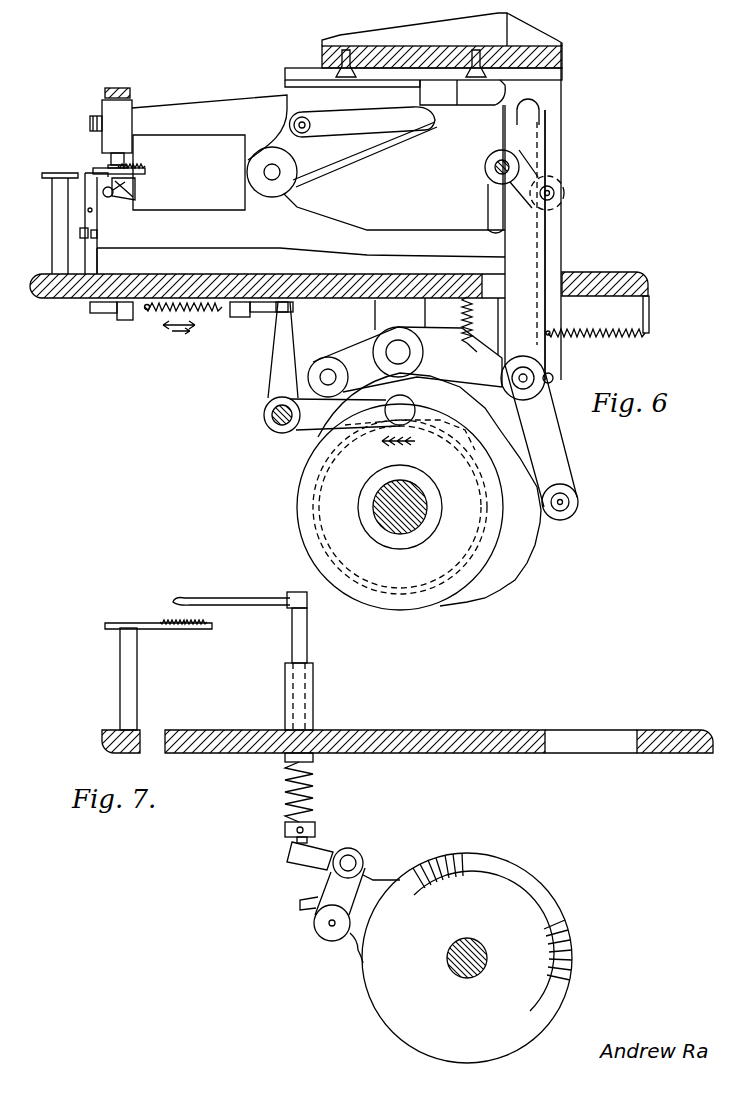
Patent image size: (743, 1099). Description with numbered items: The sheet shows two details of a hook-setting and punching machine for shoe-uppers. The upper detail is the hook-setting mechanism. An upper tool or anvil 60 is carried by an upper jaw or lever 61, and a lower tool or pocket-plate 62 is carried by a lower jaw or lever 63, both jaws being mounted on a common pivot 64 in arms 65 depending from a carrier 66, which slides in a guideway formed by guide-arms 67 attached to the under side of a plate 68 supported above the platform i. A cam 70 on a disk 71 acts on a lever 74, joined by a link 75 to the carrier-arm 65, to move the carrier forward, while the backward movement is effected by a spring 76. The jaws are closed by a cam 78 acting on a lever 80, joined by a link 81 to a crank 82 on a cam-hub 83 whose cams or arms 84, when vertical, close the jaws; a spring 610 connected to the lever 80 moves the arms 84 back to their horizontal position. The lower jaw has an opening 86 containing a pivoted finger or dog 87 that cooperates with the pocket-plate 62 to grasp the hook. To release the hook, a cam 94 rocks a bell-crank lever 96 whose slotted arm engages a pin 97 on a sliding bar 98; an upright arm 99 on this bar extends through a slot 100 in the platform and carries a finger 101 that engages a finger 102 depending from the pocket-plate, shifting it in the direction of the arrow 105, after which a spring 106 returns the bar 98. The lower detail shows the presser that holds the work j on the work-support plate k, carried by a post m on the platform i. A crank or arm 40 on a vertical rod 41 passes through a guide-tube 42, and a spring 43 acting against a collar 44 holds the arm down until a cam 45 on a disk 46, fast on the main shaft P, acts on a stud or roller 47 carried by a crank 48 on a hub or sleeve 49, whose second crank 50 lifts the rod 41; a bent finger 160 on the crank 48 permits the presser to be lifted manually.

In FIG. 6, the upper jaw or lever 61 is at (183, 108).
In FIG. 6, the lower jaw or lever 63 is at (301, 301).
In FIG. 6, the common pivot 64 is at (272, 184).
In FIG. 6, the arms 65 is at (365, 155).
In FIG. 6, the link 75 is at (401, 131).
In FIG. 6, the plate 68 is at (322, 46).
In FIG. 6, the carrier 66 is at (287, 70).
In FIG. 6, the guide-arms 67 is at (462, 103).
In FIG. 6, the cams, cranks, or arms 84 is at (503, 125).
In FIG. 6, the cam-hub 83 is at (485, 167).
In FIG. 6, the crank 82 is at (551, 178).
In FIG. 6, the lever 74 is at (568, 455).
In FIG. 6, the link 81 is at (546, 352).
In FIG. 6, the spring 76 is at (597, 327).
In FIG. 6, the spring 610 is at (462, 318).
In FIG. 6, the lever 80 is at (362, 351).
In FIG. 6, the pin 97 is at (278, 316).
In FIG. 6, the bell-crank lever 96 is at (288, 431).
In FIG. 6, the cam 78 is at (422, 404).
In FIG. 6, the disk 71 is at (428, 610).
In FIG. 6, the cam 70 is at (522, 578).
In FIG. 6, the cam 94 is at (463, 433).
In FIG. 6, the upper tool or anvil 60 is at (110, 160).
In FIG. 6, the pocket-plate 62 is at (93, 171).
In FIG. 6, the shoe-upper or work j is at (144, 167).
In FIG. 7, the shoe-upper or work j is at (160, 621).
In FIG. 6, the work-support or plate k is at (46, 176).
In FIG. 7, the work-support or plate k is at (128, 622).
In FIG. 6, the pivoted finger or dog 87 is at (136, 186).
In FIG. 6, the opening 86 is at (130, 194).
In FIG. 6, the upright arm 99 is at (98, 268).
In FIG. 6, the finger 102 is at (80, 234).
In FIG. 6, the finger 101 is at (94, 238).
In FIG. 6, the slot 100 is at (67, 302).
In FIG. 6, the sliding bar 98 is at (139, 320).
In FIG. 6, the arrow 105 is at (181, 335).
In FIG. 6, the spring 106 is at (209, 318).
In FIG. 7, the top plate or platform i is at (102, 742).
In FIG. 7, the post m is at (120, 686).
In FIG. 7, the crank or arm 40 is at (251, 598).
In FIG. 7, the vertical rod 41 is at (307, 634).
In FIG. 7, the guide-tube 42 is at (313, 691).
In FIG. 7, the spring 43 is at (313, 794).
In FIG. 7, the collar 44 is at (285, 832).
In FIG. 7, the second crank or arm 50 is at (283, 863).
In FIG. 7, the hub or sleeve 49 is at (351, 850).
In FIG. 7, the crank 48 is at (325, 884).
In FIG. 7, the stud or roller 47 is at (328, 942).
In FIG. 7, the bent finger 160 is at (300, 910).
In FIG. 7, the cam 45 is at (376, 880).
In FIG. 7, the disk 46 is at (549, 1016).
In FIG. 7, the main shaft P is at (477, 957).